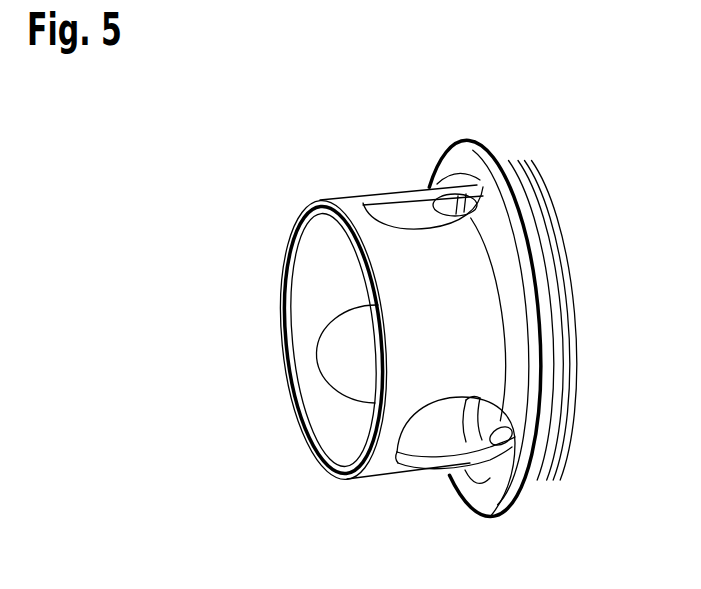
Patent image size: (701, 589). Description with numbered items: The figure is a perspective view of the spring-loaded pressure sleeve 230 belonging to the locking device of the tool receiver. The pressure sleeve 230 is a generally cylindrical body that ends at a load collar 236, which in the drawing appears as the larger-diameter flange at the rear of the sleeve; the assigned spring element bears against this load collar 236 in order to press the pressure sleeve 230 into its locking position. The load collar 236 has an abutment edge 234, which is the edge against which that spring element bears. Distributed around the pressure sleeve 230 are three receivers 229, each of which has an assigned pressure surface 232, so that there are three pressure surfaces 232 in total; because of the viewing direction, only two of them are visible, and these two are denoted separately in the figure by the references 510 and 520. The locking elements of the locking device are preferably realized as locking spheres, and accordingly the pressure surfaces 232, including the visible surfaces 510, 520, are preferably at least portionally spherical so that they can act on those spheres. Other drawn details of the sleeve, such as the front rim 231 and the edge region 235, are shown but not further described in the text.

The spring-loaded pressure sleeve 230 is at (207, 178).
The front rim 231 is at (303, 292).
The receiver 229 is at (394, 207).
The pressure surface 232 is at (449, 217).
The load collar 236 is at (451, 153).
The abutment edge 234 is at (539, 506).
The flange edge 235 is at (468, 508).
The pressure surface 510 is at (452, 217).
The pressure surface 520 is at (498, 431).